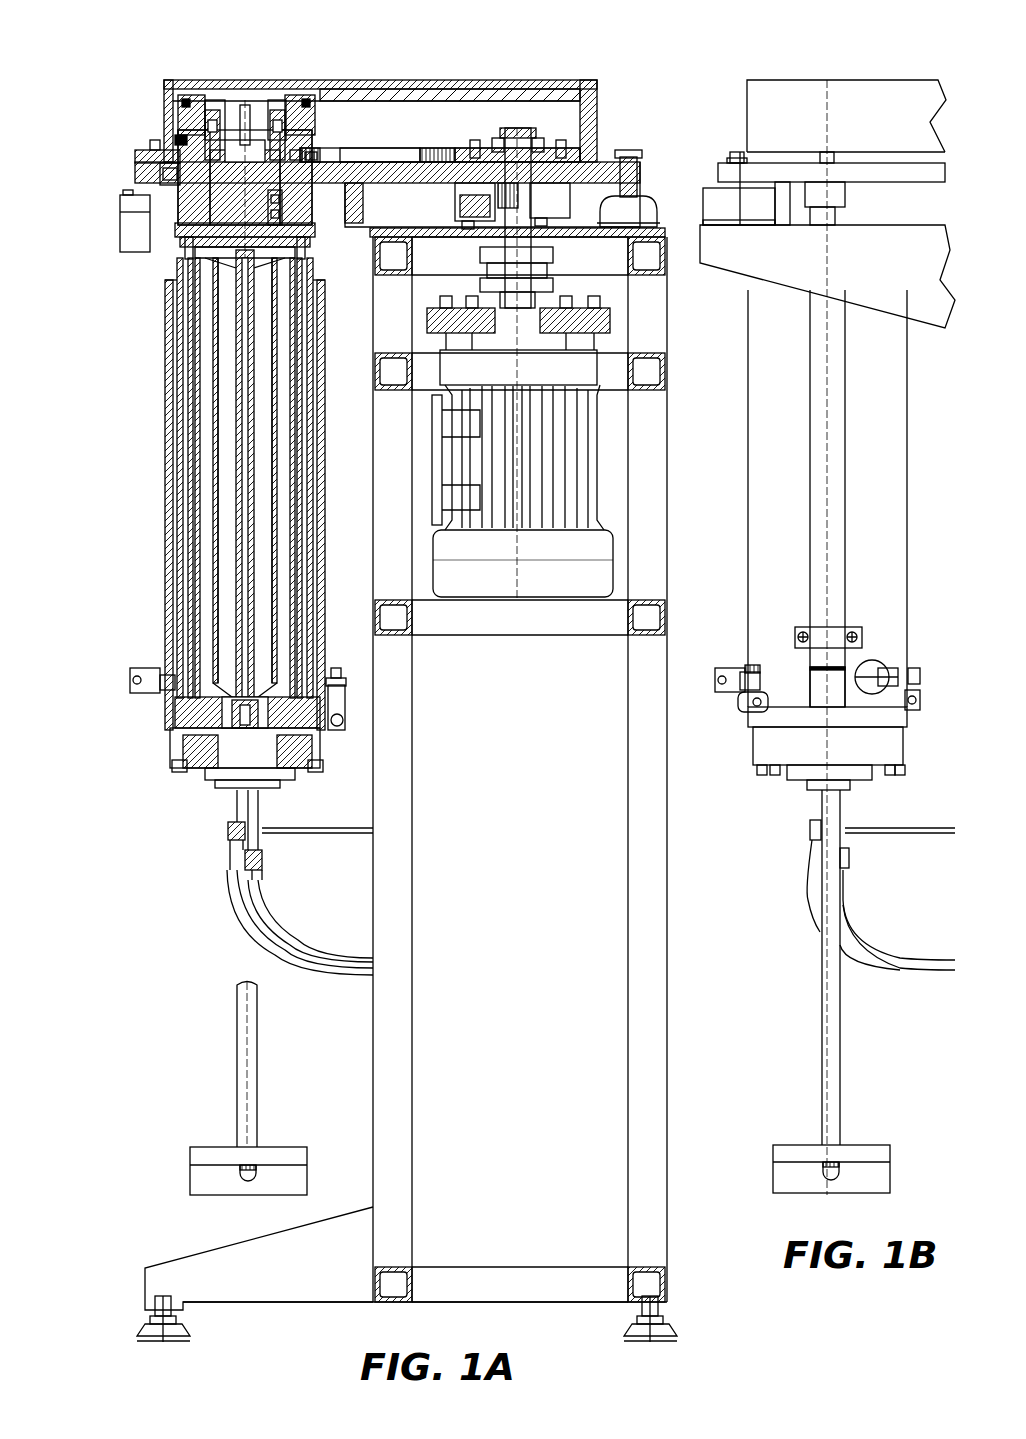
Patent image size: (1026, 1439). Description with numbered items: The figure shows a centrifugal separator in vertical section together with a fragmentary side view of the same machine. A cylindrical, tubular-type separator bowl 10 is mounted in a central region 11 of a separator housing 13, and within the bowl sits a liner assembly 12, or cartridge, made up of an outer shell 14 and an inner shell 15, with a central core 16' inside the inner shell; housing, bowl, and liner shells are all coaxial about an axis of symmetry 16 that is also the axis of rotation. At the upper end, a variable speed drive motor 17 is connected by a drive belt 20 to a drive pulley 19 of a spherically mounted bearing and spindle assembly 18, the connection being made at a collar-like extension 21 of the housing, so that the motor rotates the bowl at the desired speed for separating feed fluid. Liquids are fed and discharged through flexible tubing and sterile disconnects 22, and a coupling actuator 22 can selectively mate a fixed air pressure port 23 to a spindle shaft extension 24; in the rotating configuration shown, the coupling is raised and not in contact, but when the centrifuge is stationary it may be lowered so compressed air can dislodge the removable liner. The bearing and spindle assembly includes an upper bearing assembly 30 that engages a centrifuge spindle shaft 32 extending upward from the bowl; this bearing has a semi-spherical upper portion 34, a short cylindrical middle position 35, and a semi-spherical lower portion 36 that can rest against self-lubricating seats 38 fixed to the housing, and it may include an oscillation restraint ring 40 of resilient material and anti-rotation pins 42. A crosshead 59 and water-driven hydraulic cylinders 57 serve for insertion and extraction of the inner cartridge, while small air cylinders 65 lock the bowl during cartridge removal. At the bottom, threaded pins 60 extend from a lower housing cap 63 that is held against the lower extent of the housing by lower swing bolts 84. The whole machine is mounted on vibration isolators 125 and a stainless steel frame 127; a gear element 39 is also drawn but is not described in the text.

In FIG. 1A, the separator bowl 10 is at (190, 327).
In FIG. 1A, the central region 11 is at (190, 353).
In FIG. 1A, the liner assembly 12 is at (194, 307).
In FIG. 1A, the separator housing 13 is at (168, 462).
In FIG. 1A, the outer shell 14 is at (196, 400).
In FIG. 1A, the inner shell 15 is at (213, 428).
In FIG. 1A, the axis of symmetry 16 is at (190, 405).
In FIG. 1A, the central core 16' is at (184, 478).
In FIG. 1A, the variable speed drive motor 17 is at (614, 470).
In FIG. 1A, the spherically mounted bearing and spindle assembly 18 is at (307, 150).
In FIG. 1A, the drive pulley 19 is at (160, 172).
In FIG. 1A, the drive belt 20 is at (398, 146).
In FIG. 1A, the collar-like extension 21 is at (173, 140).
In FIG. 1A, the coupling actuator 22 is at (250, 865).
In FIG. 1A, the fixed air pressure port 23 is at (234, 132).
In FIG. 1A, the spindle shaft extension 24 is at (198, 97).
In FIG. 1A, the upper bearing assembly 30 is at (210, 222).
In FIG. 1A, the centrifuge spindle shaft 32 is at (268, 208).
In FIG. 1A, the semi-spherical upper portion 34 is at (380, 93).
In FIG. 1A, the short cylindrical middle position 35 is at (195, 178).
In FIG. 1A, the semi-spherical lower portion 36 is at (317, 133).
In FIG. 1A, the seats 38 is at (360, 203).
In FIG. 1A, the gear train 39 is at (346, 96).
In FIG. 1A, the oscillation restraint ring 40 is at (295, 90).
In FIG. 1A, the anti-rotation pins 42 is at (176, 152).
In FIG. 1A, the hydraulic cylinders 57 is at (240, 1100).
In FIG. 1B, the hydraulic cylinders 57 is at (812, 540).
In FIG. 1A, the crosshead 59 is at (190, 1148).
In FIG. 1B, the crosshead 59 is at (795, 1143).
In FIG. 1A, the threaded pins 60 is at (183, 780).
In FIG. 1A, the lower housing cap 63 is at (322, 766).
In FIG. 1A, the small air cylinders 65 is at (160, 692).
In FIG. 1B, the small air cylinders 65 is at (732, 692).
In FIG. 1A, the lower swing bolts 84 is at (347, 716).
In FIG. 1A, the vibration isolators 125 is at (641, 196).
In FIG. 1B, the vibration isolators 125 is at (726, 190).
In FIG. 1A, the stainless steel frame 127 is at (665, 398).